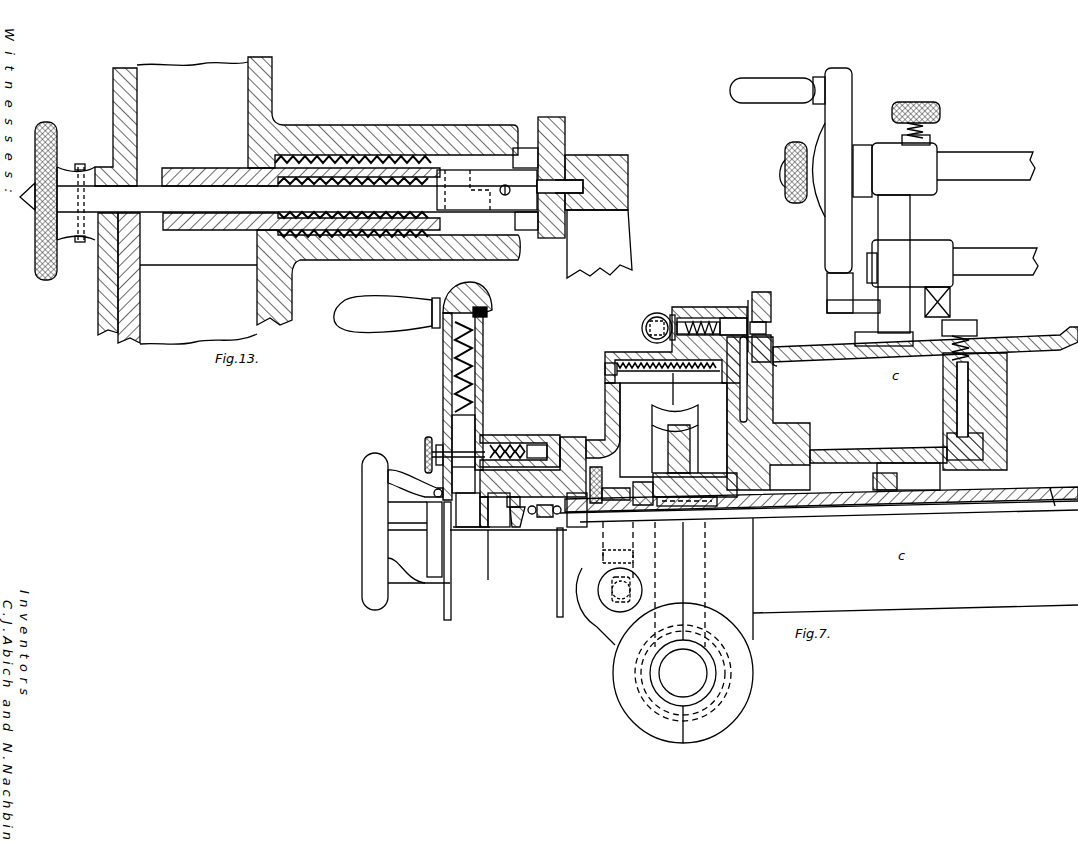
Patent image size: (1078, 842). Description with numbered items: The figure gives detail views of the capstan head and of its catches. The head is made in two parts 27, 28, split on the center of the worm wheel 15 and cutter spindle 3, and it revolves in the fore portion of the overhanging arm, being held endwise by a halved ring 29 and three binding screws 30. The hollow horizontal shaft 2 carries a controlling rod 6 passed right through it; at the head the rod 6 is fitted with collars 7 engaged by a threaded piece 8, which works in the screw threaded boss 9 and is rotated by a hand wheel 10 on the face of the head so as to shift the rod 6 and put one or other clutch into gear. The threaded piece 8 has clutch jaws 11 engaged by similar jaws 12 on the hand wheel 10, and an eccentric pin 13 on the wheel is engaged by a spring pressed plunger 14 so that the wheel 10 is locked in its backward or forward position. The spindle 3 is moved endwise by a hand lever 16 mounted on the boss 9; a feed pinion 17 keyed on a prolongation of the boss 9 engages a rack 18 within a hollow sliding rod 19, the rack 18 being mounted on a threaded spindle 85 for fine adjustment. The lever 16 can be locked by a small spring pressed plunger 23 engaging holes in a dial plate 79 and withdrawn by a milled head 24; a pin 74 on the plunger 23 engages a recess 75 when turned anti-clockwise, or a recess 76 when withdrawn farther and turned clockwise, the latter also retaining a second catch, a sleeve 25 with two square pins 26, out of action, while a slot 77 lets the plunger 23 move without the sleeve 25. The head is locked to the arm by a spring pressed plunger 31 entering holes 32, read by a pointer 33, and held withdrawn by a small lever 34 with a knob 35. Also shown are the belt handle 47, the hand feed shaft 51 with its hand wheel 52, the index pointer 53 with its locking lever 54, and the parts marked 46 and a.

In FIG. 7, the horizontal shaft 2 is at (985, 497).
In FIG. 7, the cutter spindle 3 is at (840, 630).
In FIG. 7, the controlling rod 6 is at (1058, 488).
In FIG. 7, the collars 7 is at (558, 520).
In FIG. 7, the threaded piece 8 is at (536, 520).
In FIG. 7, the screw threaded boss 9 is at (568, 470).
In FIG. 7, the hand wheel 10 is at (368, 505).
In FIG. 7, the clutch jaws 11 is at (517, 527).
In FIG. 7, the jaws 12 is at (430, 485).
In FIG. 7, the eccentric pin 13 is at (466, 527).
In FIG. 13, the spring pressed plunger 14 is at (176, 203).
In FIG. 7, the spring pressed plunger 14 is at (470, 445).
In FIG. 7, the worm wheel 15 is at (688, 420).
In FIG. 13, the hand lever 16 is at (265, 118).
In FIG. 7, the hand lever 16 is at (483, 350).
In FIG. 7, the feed pinion 17 is at (630, 552).
In FIG. 7, the rack 18 is at (635, 566).
In FIG. 7, the hollow sliding rod 19 is at (612, 605).
In FIG. 13, the spring pressed plunger 23 is at (585, 186).
In FIG. 7, the spring pressed plunger 23 is at (540, 443).
In FIG. 13, the milled head 24 is at (64, 250).
In FIG. 7, the milled head 24 is at (428, 437).
In FIG. 13, the sleeve 25 is at (352, 155).
In FIG. 7, the sleeve 25 is at (520, 443).
In FIG. 13, the square pins 26 is at (530, 230).
In FIG. 7, the square pins 26 is at (562, 440).
In FIG. 7, the capstan head part 27 is at (634, 357).
In FIG. 7, the capstan head part 28 is at (707, 340).
In FIG. 7, the halved ring 29 is at (965, 448).
In FIG. 7, the binding screws 30 is at (960, 392).
In FIG. 7, the spring pressed plunger 31 is at (735, 328).
In FIG. 13, the holes 32 is at (297, 203).
In FIG. 7, the holes 32 is at (768, 327).
In FIG. 7, the pointer 33 is at (752, 300).
In FIG. 7, the small lever 34 is at (664, 314).
In FIG. 7, the knob 35 is at (646, 318).
In FIG. 13, the rod 46 is at (528, 148).
In FIG. 7, the rod 46 is at (992, 257).
In FIG. 7, the handle 47 is at (930, 250).
In FIG. 7, the shaft 51 is at (952, 165).
In FIG. 7, the hand wheel 52 is at (840, 92).
In FIG. 7, the index pointer 53 is at (830, 273).
In FIG. 7, the locking lever 54 is at (928, 103).
In FIG. 13, the pin 74 is at (566, 153).
In FIG. 13, the recess 75 is at (498, 185).
In FIG. 13, the recess 76 is at (445, 225).
In FIG. 13, the slot 77 is at (475, 172).
In FIG. 13, the dial plate 79 is at (565, 120).
In FIG. 7, the threaded spindle 85 is at (632, 590).
In FIG. 7, the notch a is at (416, 445).